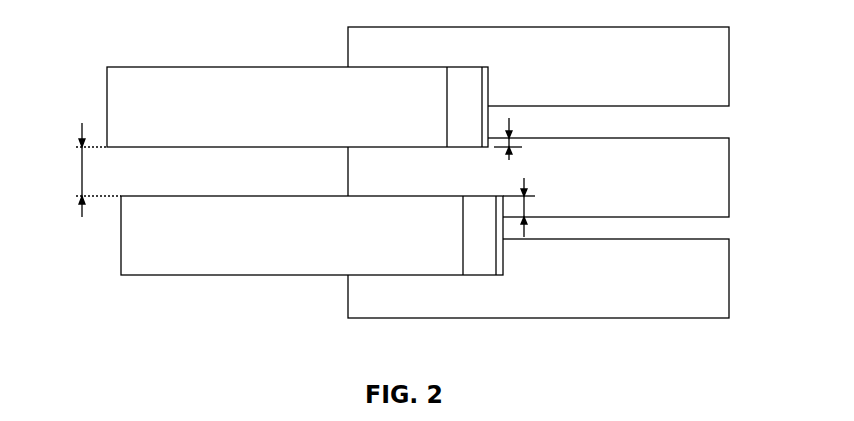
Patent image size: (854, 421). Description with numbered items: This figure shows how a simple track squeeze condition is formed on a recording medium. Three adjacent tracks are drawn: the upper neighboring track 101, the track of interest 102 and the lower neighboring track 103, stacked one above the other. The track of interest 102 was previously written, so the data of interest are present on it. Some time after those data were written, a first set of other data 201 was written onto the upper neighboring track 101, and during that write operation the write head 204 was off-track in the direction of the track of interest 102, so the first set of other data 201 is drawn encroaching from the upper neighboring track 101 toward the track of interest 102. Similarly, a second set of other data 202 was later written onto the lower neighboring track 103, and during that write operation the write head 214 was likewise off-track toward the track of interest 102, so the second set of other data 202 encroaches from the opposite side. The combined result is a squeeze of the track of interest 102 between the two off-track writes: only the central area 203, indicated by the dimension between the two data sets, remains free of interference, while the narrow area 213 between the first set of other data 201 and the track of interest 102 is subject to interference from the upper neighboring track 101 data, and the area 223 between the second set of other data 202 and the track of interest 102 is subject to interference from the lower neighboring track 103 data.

The track k-1 101 is at (731, 68).
The track k 102 is at (731, 180).
The track k+1 103 is at (731, 281).
The first set of other data 201 is at (172, 67).
The second set of other data 202 is at (186, 196).
The interference-free area 203 is at (82, 172).
The write head 204 is at (458, 104).
The area subject to interference from track k-1 data 213 is at (509, 140).
The write head 214 is at (474, 230).
The area subject to interference from track k+1 data 223 is at (527, 205).